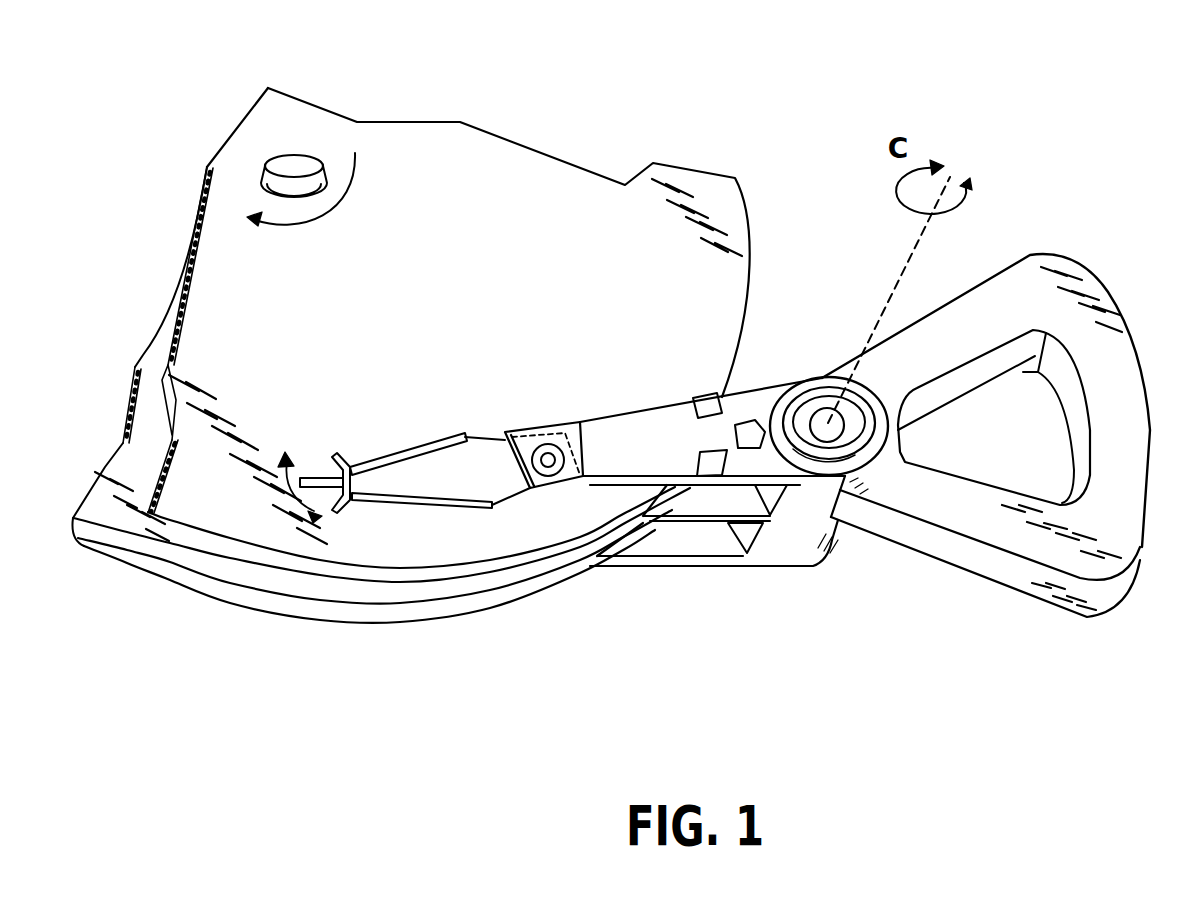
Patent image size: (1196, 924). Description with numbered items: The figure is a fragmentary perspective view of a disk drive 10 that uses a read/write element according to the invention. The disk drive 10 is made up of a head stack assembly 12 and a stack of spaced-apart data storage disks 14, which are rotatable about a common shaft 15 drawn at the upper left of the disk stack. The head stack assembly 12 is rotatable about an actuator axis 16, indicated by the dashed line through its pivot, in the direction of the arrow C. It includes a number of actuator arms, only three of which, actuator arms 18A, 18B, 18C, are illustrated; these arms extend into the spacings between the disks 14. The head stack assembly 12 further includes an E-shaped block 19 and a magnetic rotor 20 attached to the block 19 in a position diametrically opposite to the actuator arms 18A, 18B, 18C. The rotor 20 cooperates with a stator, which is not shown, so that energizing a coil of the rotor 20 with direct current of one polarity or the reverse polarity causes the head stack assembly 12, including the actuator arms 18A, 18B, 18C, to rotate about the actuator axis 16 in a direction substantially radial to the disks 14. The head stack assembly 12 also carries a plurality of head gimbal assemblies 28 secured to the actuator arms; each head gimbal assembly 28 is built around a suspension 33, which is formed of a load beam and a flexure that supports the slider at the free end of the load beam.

The disk drive 10 is at (563, 47).
The head stack assembly 12 is at (793, 598).
The data storage disks 14 is at (493, 227).
The common shaft 15 is at (278, 163).
The actuator axis 16 is at (920, 236).
The actuator arm 18A is at (660, 402).
The actuator arm 18B is at (677, 519).
The actuator arm 18C is at (705, 558).
The E-shaped block 19 is at (802, 547).
The magnetic rotor 20 is at (973, 565).
The head gimbal assembly 28 is at (415, 428).
The suspension 33 is at (450, 492).